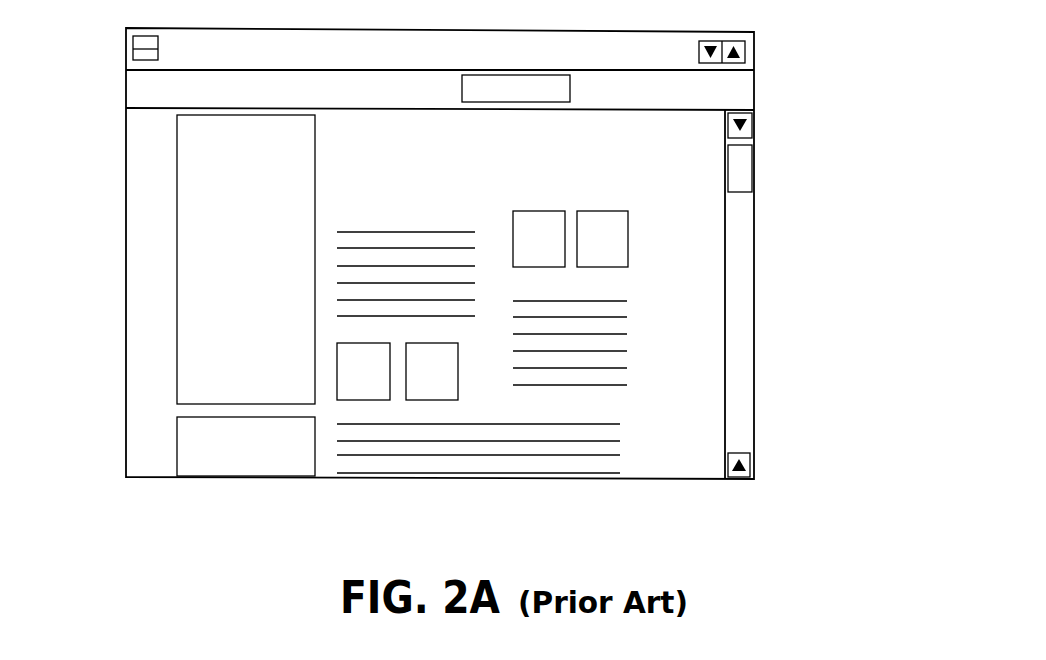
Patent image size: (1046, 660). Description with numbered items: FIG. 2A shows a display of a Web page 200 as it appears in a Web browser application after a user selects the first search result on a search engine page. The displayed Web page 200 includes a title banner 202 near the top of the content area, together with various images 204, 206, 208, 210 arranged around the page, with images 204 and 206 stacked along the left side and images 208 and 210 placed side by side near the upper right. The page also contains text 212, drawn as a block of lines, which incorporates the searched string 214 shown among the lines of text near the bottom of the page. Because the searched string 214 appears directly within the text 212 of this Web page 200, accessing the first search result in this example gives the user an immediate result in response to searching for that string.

The Web page 200 is at (785, 236).
The title banner 202 is at (604, 163).
The image 204 is at (180, 283).
The image 206 is at (177, 437).
The image 208 is at (550, 267).
The image 210 is at (631, 237).
The text 212 is at (625, 367).
The searched string 214 is at (613, 453).